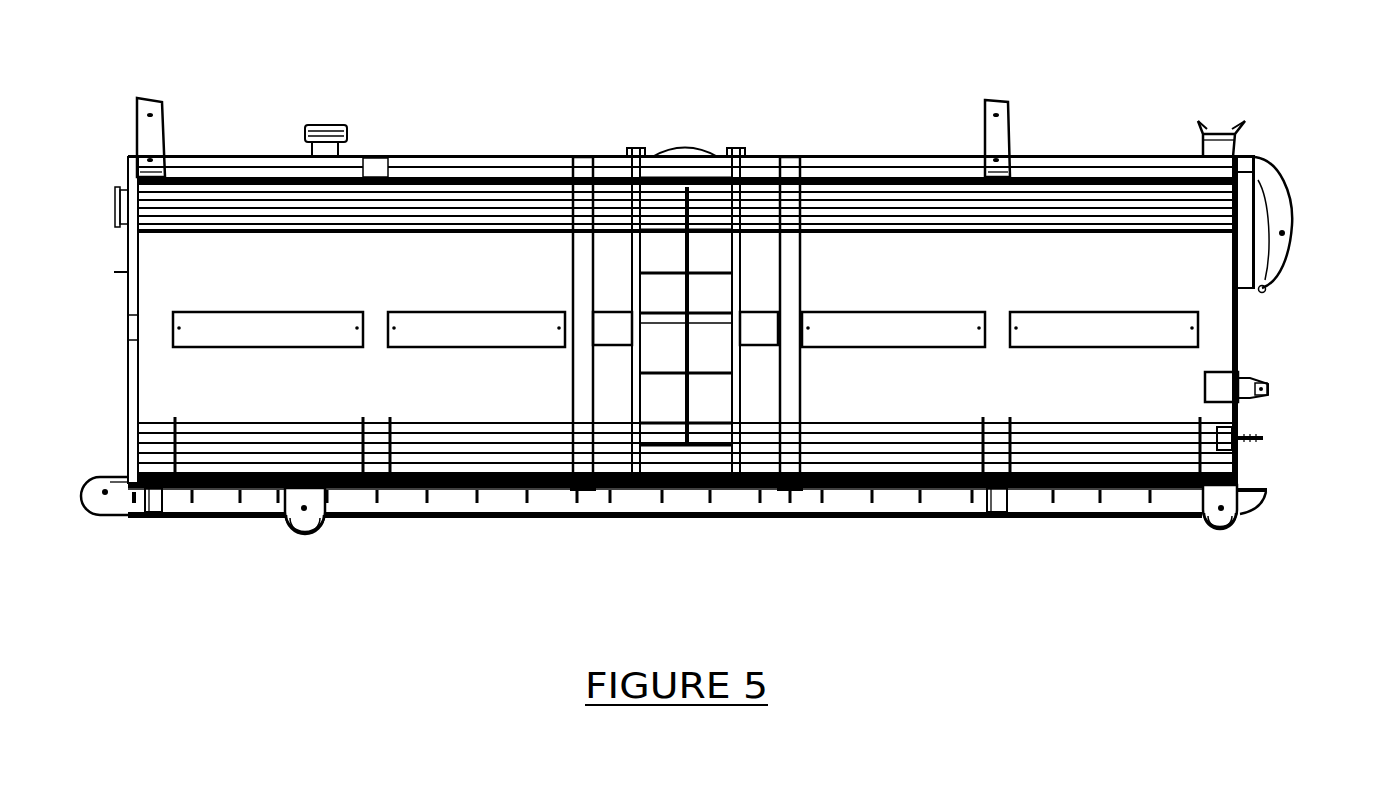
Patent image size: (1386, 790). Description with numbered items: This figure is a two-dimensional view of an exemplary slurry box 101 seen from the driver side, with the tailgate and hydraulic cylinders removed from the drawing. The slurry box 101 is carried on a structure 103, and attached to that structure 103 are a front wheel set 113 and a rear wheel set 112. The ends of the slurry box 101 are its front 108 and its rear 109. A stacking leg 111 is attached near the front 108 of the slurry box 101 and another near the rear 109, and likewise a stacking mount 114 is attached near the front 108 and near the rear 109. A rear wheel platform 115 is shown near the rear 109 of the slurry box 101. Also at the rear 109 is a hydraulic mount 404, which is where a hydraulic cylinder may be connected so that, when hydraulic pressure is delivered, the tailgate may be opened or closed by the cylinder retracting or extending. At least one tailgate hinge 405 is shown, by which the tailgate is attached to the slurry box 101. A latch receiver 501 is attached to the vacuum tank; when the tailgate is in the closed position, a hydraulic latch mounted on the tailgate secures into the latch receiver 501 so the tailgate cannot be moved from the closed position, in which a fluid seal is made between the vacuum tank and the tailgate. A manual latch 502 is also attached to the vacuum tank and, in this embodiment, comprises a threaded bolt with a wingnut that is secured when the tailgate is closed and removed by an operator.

The slurry box 101 is at (500, 155).
The structure 103 is at (800, 519).
The front 108 is at (128, 402).
The rear 109 is at (1284, 513).
The stacking leg 111 is at (577, 550).
The rear wheel set 112 is at (1226, 546).
The front wheel set 113 is at (358, 558).
The stacking mount 114 is at (543, 107).
The rear wheel platform 115 is at (1195, 105).
The hydraulic mount 404 is at (1320, 188).
The tailgate hinge 405 is at (1296, 308).
The latch receiver 501 is at (1268, 376).
The manual latch 502 is at (1274, 427).